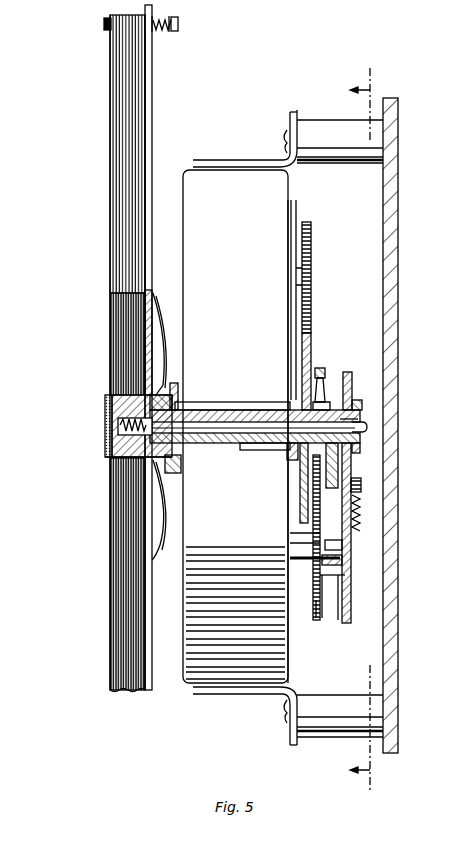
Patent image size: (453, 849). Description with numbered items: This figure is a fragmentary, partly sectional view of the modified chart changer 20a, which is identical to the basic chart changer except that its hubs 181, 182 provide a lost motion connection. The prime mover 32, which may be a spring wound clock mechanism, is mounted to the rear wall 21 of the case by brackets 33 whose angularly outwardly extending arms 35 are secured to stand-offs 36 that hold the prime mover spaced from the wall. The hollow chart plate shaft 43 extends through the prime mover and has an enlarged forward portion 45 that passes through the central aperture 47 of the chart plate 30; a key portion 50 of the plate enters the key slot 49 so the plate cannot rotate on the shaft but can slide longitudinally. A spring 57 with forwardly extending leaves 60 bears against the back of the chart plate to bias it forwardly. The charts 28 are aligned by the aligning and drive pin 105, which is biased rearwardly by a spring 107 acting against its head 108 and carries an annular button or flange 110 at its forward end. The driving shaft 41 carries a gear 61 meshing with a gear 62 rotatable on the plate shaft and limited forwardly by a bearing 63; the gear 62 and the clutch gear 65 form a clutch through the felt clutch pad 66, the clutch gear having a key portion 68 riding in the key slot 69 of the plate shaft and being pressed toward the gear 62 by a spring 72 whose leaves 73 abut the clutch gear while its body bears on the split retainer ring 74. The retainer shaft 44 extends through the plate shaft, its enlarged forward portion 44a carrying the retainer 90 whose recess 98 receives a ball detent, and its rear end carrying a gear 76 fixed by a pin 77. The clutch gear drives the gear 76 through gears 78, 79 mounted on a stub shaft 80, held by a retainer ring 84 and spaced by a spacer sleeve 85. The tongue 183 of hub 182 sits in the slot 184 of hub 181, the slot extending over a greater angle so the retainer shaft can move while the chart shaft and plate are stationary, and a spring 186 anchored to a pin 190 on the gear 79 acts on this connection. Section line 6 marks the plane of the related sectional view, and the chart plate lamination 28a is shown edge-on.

The section line 6- 6 is at (374, 430).
The chart changer 20a is at (103, 452).
The rear wall 21 is at (399, 380).
The charts 28 is at (99, 633).
The stator laminations 28a is at (112, 233).
The chart plate 30 is at (151, 142).
The prime mover 32 is at (182, 180).
The brackets 33 is at (240, 158).
The angularly outwardly extending arms 35 is at (289, 112).
The stand-offs 36 is at (324, 124).
The driving shaft 41 is at (295, 250).
The chart plate shaft 43 is at (236, 414).
The retainer shaft 44 is at (218, 410).
The forward portion of the retainer shaft 44a is at (115, 440).
The enlarged forward portion 45 is at (177, 399).
The central aperture 47 is at (182, 460).
The key slot 49 is at (165, 395).
The key portion 50 is at (152, 395).
The spring 57 is at (173, 511).
The arms or leaves 60 is at (160, 335).
The gear 61 is at (312, 282).
The gear 62 is at (300, 490).
The bearing 63 is at (287, 455).
The clutch gear 65 is at (330, 362).
The clutch pad 66 is at (326, 366).
The key portion 68 is at (360, 388).
The key slot 69 is at (356, 422).
The spring 72 is at (352, 450).
The leaves or arms 73 is at (340, 483).
The split retainer ring 74 is at (356, 445).
The gear 76 is at (348, 372).
The pin 77 is at (365, 428).
The gear 78 is at (313, 620).
The gear 79 is at (345, 622).
The stub shaft 80 is at (345, 552).
The retainer ring 84 is at (335, 568).
The spacer sleeve 85 is at (312, 570).
The retainer 90 is at (105, 405).
The recess 98 is at (118, 425).
The aligning and drive pin 105 is at (165, 20).
The spring 107 is at (167, 32).
The head 108 is at (179, 24).
The annular button or flange 110 is at (104, 25).
The hub 181 is at (323, 620).
The hub 182 is at (338, 622).
The tongue 183 is at (300, 538).
The slot 184 is at (300, 552).
The spring 186 is at (362, 518).
The pin 190 is at (358, 488).